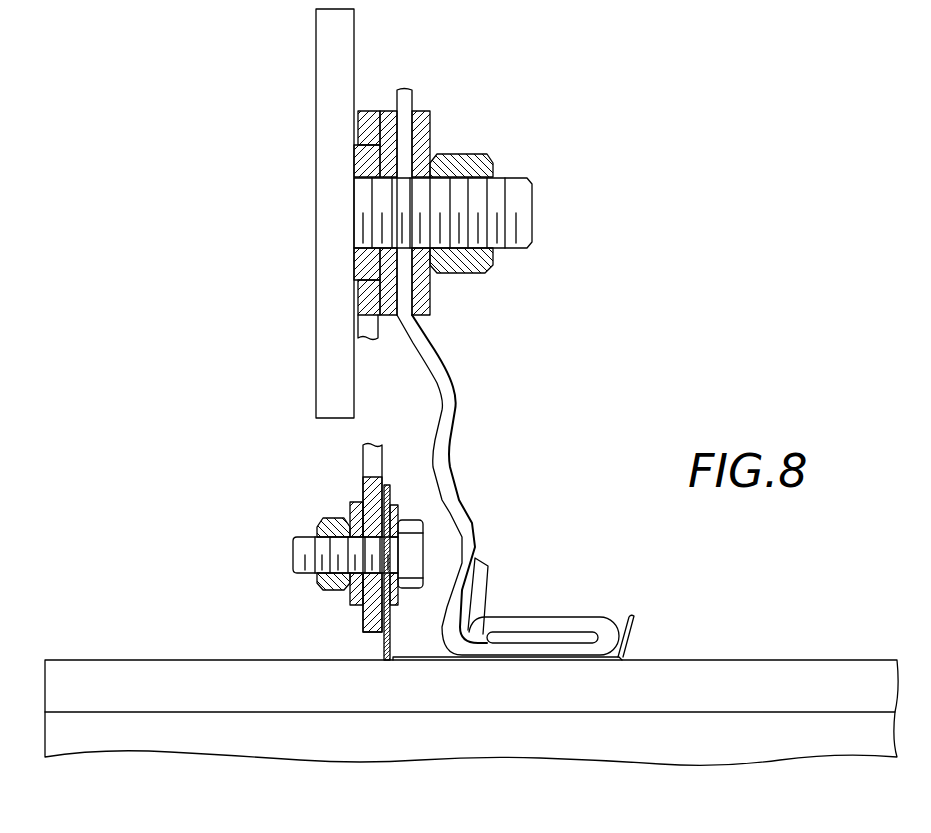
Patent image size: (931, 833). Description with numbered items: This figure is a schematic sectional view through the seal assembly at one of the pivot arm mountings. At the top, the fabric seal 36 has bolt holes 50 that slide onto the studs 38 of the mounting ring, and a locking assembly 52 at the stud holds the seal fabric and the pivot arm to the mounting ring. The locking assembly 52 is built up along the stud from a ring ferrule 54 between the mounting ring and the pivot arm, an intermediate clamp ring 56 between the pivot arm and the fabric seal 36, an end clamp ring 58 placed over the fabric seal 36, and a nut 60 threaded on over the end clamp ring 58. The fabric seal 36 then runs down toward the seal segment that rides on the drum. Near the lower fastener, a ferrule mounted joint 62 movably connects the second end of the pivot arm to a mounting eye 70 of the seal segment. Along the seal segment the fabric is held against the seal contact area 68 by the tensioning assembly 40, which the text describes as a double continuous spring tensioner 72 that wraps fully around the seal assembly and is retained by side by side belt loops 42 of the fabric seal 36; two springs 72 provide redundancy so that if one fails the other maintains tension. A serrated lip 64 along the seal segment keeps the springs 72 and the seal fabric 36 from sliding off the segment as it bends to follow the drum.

The fabric seal 36 is at (455, 403).
The studs 38 is at (533, 213).
The tensioning assembly 40 is at (508, 506).
The belt loops 42 is at (558, 617).
The bolt holes 50 is at (403, 252).
The locking assembly 52 is at (430, 185).
The ring ferrule 54 is at (360, 162).
The intermediate clamp ring 56 is at (385, 110).
The end clamp ring 58 is at (423, 110).
The nut 60 is at (486, 157).
The ferrule mounted joint 62 is at (326, 538).
The lip 64 is at (635, 622).
The seal contact area 68 is at (440, 660).
The mounting eye 70 is at (397, 595).
The continuous spring tensioner 72 is at (572, 637).